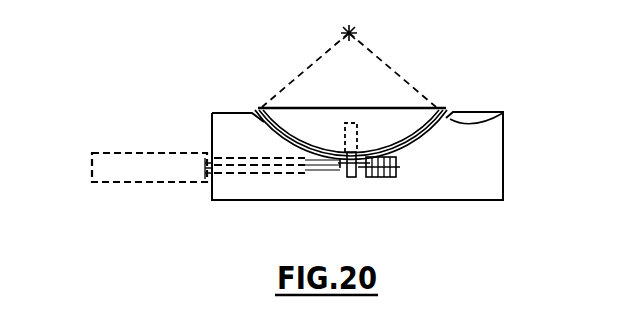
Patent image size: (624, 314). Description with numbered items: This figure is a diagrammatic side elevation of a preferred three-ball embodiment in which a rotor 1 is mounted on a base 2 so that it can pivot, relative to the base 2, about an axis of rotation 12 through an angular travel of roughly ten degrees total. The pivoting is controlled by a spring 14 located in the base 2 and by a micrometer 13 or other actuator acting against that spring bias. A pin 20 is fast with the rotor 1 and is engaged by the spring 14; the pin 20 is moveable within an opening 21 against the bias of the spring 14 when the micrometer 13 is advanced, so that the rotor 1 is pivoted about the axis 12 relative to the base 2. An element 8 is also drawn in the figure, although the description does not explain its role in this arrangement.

The rotor 1 is at (428, 106).
The base 2 is at (503, 166).
The membrane 8 is at (505, 116).
The axis of rotation 12 is at (356, 28).
The micrometer 13 is at (92, 163).
The spring 14 is at (383, 178).
The pin 20 is at (352, 178).
The opening 21 is at (345, 178).